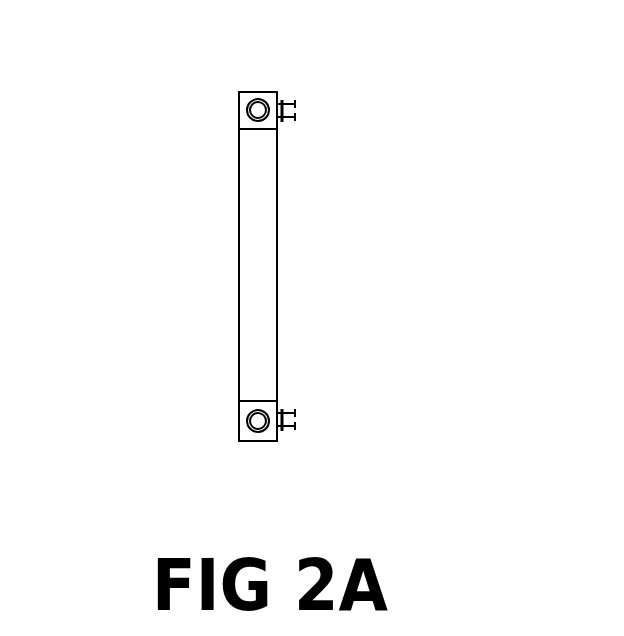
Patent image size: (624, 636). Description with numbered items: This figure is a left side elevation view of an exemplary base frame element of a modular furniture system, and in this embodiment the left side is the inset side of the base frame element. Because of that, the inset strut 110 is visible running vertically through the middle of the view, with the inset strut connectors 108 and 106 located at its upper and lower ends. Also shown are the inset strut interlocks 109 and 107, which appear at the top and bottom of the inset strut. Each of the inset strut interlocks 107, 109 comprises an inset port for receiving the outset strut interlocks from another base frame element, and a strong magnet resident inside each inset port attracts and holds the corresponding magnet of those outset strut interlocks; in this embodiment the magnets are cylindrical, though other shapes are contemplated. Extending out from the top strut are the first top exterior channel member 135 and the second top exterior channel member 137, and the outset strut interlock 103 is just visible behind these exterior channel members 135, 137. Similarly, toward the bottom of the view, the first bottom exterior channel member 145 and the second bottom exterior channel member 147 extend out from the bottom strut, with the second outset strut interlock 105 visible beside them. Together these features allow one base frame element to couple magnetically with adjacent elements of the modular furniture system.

The outset strut interlock 103 is at (312, 110).
The second outset strut interlock 105 is at (312, 420).
The inset strut connector 106 is at (239, 441).
The inset strut interlock 107 is at (239, 421).
The inset strut connector 108 is at (239, 92).
The inset strut interlock 109 is at (239, 115).
The inset strut 110 is at (239, 278).
The first top exterior channel member 135 is at (296, 100).
The second top exterior channel member 137 is at (293, 120).
The first bottom exterior channel member 145 is at (293, 430).
The second bottom exterior channel member 147 is at (295, 410).